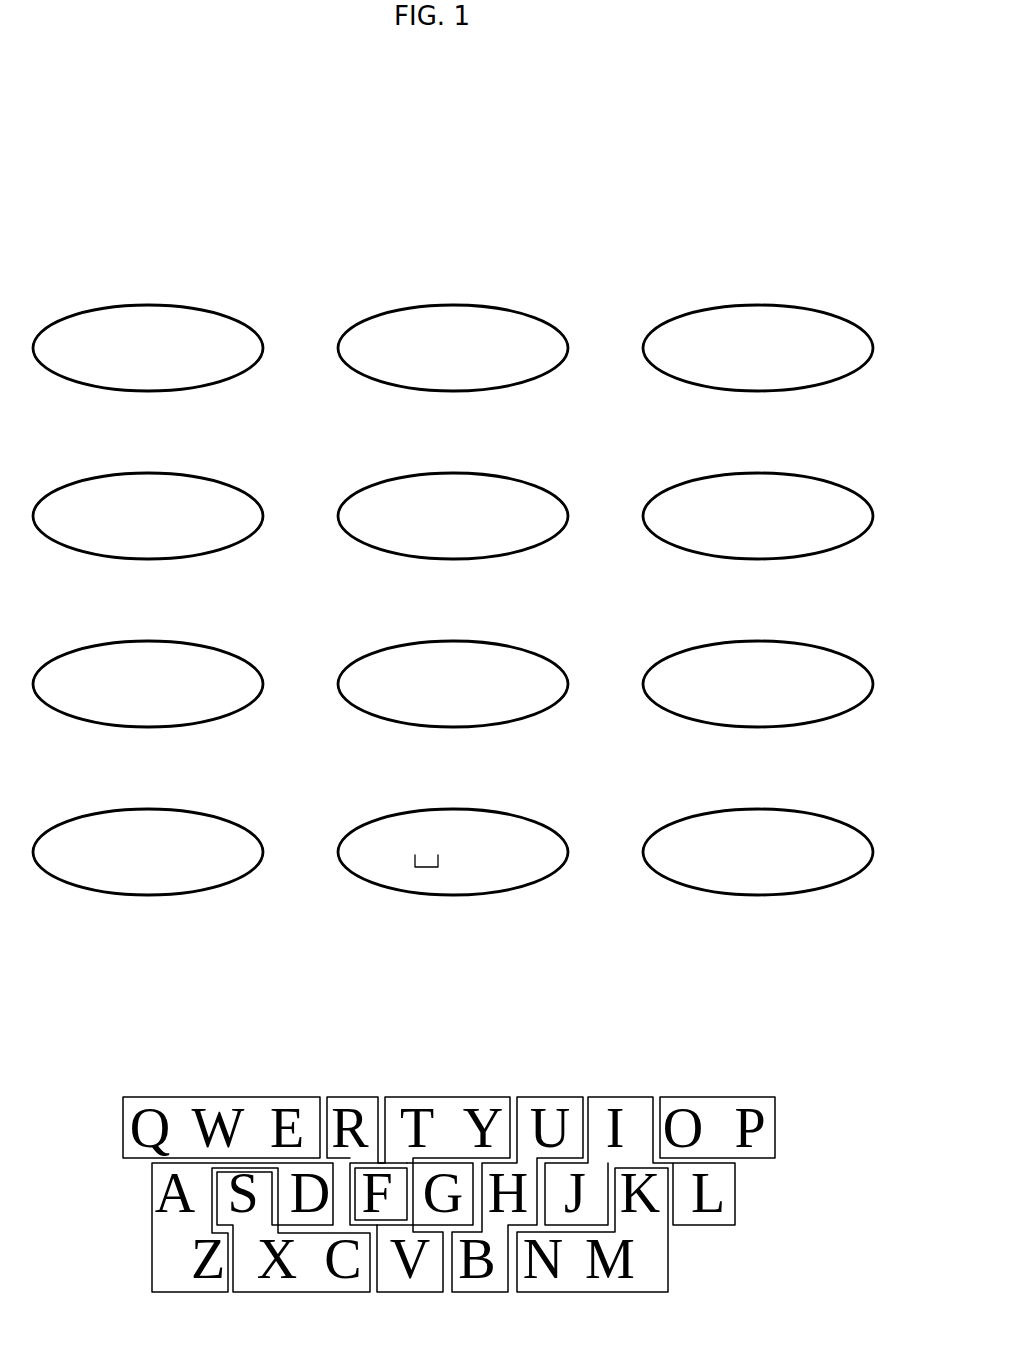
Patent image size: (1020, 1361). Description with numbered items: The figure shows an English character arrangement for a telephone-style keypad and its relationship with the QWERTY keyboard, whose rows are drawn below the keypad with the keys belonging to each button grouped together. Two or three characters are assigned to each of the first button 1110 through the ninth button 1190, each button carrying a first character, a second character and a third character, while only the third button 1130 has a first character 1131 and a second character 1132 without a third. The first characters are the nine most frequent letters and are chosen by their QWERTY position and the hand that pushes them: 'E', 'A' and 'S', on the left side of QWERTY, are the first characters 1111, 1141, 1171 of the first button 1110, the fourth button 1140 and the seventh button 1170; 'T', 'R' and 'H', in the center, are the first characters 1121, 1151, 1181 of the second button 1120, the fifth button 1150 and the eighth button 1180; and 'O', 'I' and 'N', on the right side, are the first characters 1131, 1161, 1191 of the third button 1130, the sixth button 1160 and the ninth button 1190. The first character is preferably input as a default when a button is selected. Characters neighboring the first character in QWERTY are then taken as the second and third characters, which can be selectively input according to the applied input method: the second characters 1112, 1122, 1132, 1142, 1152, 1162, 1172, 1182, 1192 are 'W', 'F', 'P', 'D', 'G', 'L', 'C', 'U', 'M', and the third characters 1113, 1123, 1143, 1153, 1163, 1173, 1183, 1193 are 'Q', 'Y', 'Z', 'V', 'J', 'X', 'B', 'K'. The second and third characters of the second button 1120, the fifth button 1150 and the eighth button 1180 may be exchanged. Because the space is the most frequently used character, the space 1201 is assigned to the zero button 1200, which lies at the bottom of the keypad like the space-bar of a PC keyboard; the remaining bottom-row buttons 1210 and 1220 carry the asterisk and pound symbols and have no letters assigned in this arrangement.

The button 1 1110 is at (172, 334).
The first character 1111 is at (113, 315).
The second character 1112 is at (171, 315).
The third character 1113 is at (226, 315).
The button 2 1120 is at (477, 334).
The first character 1121 is at (418, 315).
The second character 1122 is at (475, 315).
The third character 1123 is at (531, 315).
The button 3 1130 is at (782, 334).
The first character 1131 is at (725, 315).
The second character 1132 is at (782, 315).
The button 4 1140 is at (172, 502).
The first character 1141 is at (115, 483).
The second character 1142 is at (170, 483).
The third character 1143 is at (227, 483).
The button 5 1150 is at (477, 502).
The first character 1151 is at (419, 483).
The second character 1152 is at (475, 483).
The third character 1153 is at (531, 483).
The button 6 1160 is at (782, 502).
The first character 1161 is at (721, 483).
The second character 1162 is at (780, 483).
The third character 1163 is at (838, 483).
The button 7 1170 is at (172, 670).
The first character 1171 is at (113, 651).
The second character 1172 is at (170, 651).
The third character 1173 is at (226, 651).
The button 8 1180 is at (477, 670).
The first character 1181 is at (419, 651).
The second character 1182 is at (475, 651).
The third character 1183 is at (532, 651).
The button 9 1190 is at (782, 670).
The first character 1191 is at (724, 651).
The second character 1192 is at (780, 651).
The third character 1193 is at (836, 651).
The button 0 1200 is at (477, 838).
The space 1201 is at (416, 815).
The * button 1210 is at (172, 838).
The # button 1220 is at (782, 838).